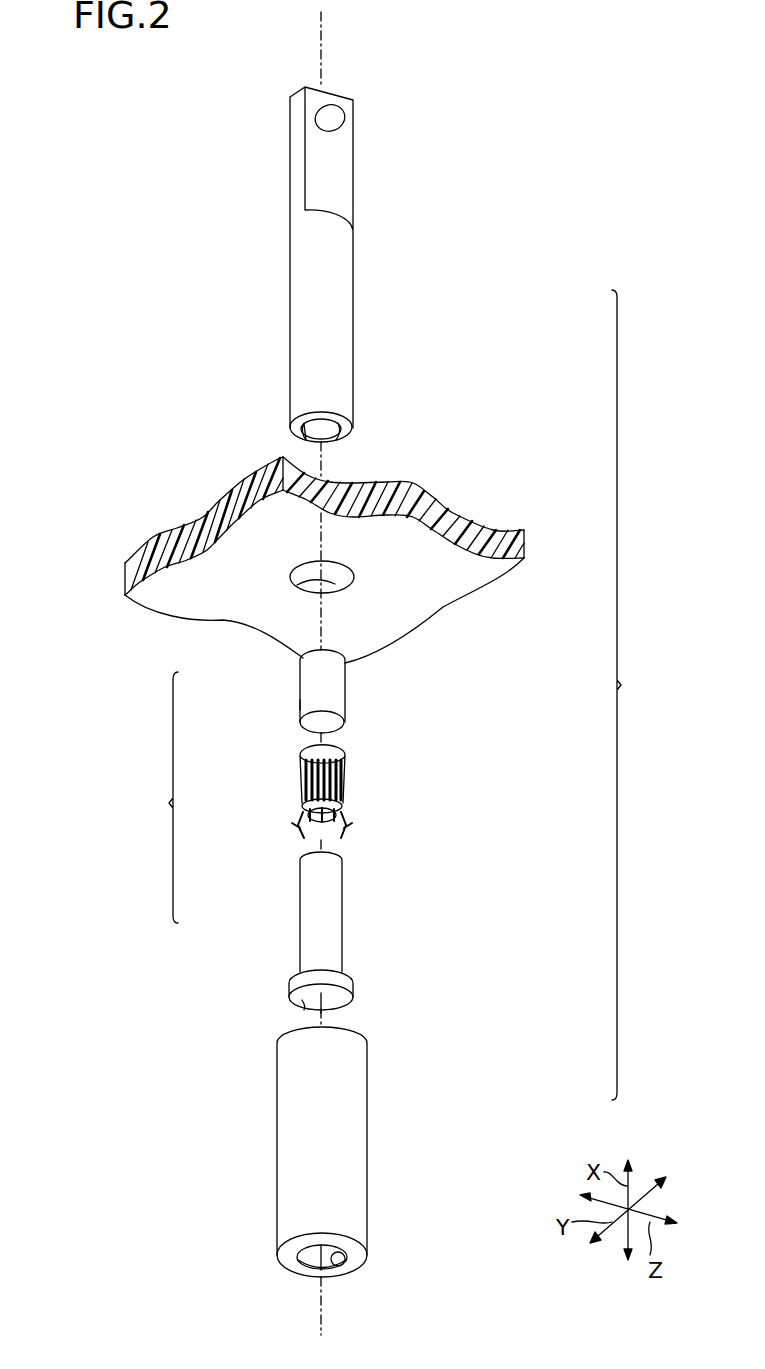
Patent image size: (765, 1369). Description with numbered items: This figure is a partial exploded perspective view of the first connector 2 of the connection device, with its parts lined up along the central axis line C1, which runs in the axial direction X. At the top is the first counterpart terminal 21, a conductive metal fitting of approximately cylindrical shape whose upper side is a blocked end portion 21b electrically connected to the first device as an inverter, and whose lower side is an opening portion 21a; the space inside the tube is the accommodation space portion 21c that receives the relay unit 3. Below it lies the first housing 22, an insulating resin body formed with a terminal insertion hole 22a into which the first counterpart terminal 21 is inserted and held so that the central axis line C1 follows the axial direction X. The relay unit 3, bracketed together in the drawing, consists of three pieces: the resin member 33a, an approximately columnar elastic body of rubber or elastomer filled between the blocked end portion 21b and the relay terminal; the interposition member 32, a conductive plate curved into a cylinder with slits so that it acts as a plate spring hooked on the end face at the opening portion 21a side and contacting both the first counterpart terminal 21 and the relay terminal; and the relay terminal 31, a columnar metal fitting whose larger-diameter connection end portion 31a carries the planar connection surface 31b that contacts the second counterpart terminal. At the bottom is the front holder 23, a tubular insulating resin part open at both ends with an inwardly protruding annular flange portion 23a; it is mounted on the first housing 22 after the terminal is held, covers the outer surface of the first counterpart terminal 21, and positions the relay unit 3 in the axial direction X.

The central axis line C1 is at (321, 68).
The first connector 2 is at (625, 695).
The first counterpart terminal 21 is at (357, 304).
The opening portion 21a is at (349, 438).
The blocked end portion 21b is at (333, 178).
The accommodation space portion 21c is at (300, 445).
The first housing 22 is at (443, 490).
The terminal insertion hole 22a is at (297, 585).
The relay unit 3 is at (165, 797).
The resin member 33a is at (296, 682).
The interposition member 32 is at (296, 760).
The relay terminal 31 is at (297, 907).
The connection end portion 31a is at (345, 982).
The connection surface 31b is at (304, 1000).
The front holder 23 is at (370, 1079).
The flange portion 23a is at (358, 1270).